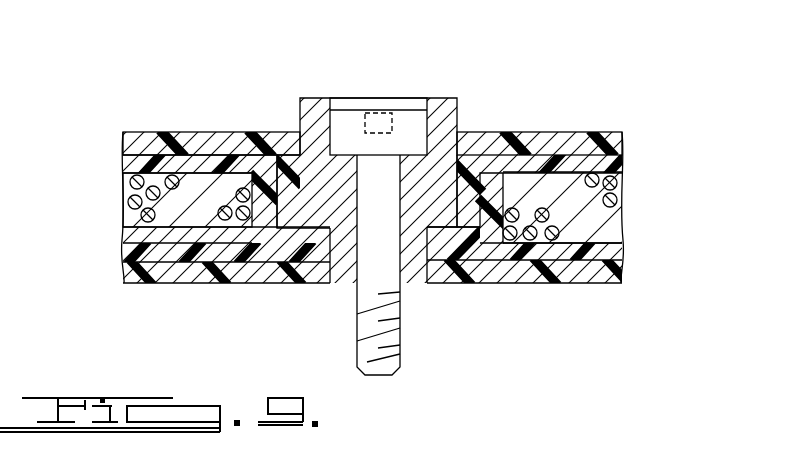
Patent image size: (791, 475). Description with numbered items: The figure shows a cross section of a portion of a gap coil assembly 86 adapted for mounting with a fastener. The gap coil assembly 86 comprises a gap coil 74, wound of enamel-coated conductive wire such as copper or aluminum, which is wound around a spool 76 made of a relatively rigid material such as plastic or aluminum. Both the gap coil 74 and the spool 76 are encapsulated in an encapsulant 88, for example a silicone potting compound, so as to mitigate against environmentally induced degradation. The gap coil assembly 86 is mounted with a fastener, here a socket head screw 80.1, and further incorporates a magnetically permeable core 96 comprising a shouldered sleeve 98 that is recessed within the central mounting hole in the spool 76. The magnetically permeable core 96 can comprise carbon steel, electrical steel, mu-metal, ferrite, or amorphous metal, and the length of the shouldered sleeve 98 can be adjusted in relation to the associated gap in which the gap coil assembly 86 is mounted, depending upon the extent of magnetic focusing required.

The gap coil 74 is at (620, 197).
The spool 76 is at (137, 164).
The socket head screw 80.1 is at (350, 120).
The gap coil assembly 86 is at (613, 102).
The encapsulant 88 is at (622, 134).
The magnetically permeable core 96 is at (300, 123).
The shouldered sleeve 98 is at (395, 185).